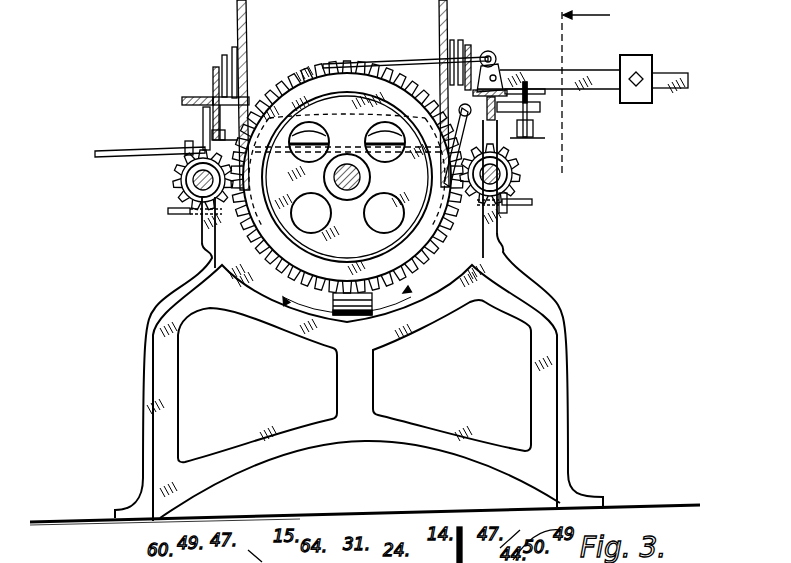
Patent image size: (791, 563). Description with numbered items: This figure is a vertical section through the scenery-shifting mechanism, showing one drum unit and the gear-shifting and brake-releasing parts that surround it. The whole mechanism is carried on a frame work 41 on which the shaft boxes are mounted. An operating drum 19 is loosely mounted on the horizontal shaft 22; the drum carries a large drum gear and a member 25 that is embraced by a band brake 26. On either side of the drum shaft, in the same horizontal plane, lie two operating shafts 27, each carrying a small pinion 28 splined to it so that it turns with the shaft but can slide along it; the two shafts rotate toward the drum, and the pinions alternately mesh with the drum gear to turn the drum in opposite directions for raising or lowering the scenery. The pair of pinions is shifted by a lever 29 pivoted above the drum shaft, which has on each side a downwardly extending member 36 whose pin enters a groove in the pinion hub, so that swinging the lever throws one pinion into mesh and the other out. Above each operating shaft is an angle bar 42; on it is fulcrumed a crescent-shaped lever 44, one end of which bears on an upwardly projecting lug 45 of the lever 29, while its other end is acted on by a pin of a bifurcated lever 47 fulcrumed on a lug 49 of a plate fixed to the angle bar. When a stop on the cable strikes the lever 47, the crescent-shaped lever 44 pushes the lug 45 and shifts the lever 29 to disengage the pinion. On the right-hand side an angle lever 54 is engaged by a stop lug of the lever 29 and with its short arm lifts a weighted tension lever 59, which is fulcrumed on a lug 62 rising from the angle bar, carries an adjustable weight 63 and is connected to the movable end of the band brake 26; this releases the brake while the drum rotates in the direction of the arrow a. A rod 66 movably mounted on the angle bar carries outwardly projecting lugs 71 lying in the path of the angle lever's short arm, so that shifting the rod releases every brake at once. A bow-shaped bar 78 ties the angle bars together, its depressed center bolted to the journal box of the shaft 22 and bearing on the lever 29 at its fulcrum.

The brake member of the drum 25 is at (306, 66).
The bow-shaped bar 78 is at (281, 93).
The operating drum 19 is at (405, 168).
The horizontal shaft 22 is at (347, 192).
The band brake 26 is at (378, 62).
The lever 47 is at (251, 56).
The upwardly projecting lug 49 is at (221, 55).
The crescent-shaped lever 44 is at (217, 85).
The angle bar 42 is at (199, 118).
The upwardly projecting lug 45 is at (207, 135).
The lever 29 is at (107, 149).
The operating shaft 27 is at (190, 185).
The pinion 28 is at (163, 160).
The downwardly extending member 36 is at (177, 212).
The frame work 41 is at (359, 365).
The arrow a is at (417, 278).
The lug 62 is at (496, 66).
The angle lever 54 is at (522, 68).
The outwardly projecting lug 71 is at (533, 107).
The rod 66 is at (513, 123).
The adjustable weight 63 is at (650, 60).
The tension lever 59 is at (604, 87).